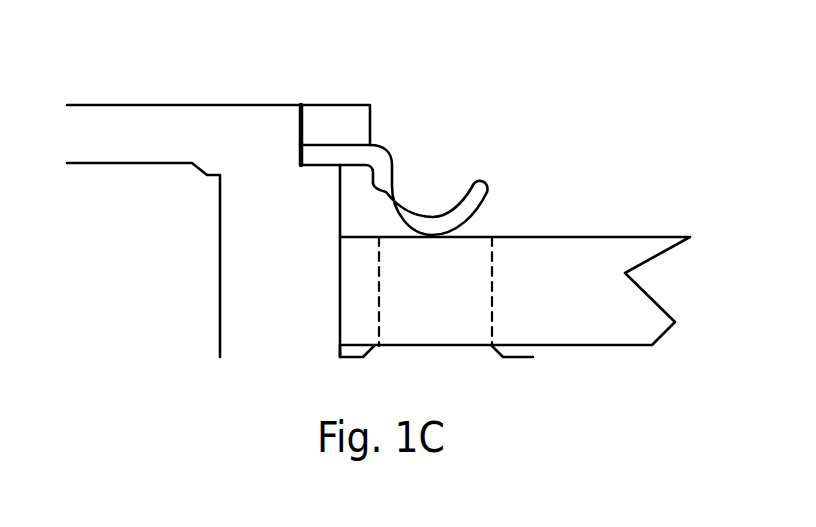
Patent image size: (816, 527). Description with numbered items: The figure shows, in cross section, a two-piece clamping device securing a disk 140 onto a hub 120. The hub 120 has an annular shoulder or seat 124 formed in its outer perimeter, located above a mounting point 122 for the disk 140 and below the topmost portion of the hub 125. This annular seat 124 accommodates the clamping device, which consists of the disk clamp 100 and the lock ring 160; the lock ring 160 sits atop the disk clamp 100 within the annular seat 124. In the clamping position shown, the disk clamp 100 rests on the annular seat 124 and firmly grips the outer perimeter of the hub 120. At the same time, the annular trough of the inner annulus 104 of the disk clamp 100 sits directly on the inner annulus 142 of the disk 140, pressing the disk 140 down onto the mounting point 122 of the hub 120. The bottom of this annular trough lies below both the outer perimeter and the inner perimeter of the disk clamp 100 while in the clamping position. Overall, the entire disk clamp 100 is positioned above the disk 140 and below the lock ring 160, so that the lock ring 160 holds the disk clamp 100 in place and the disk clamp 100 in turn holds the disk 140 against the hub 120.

The disk clamp 100 is at (592, 132).
The inner annulus 104 is at (430, 215).
The hub 120 is at (183, 231).
The mounting point 122 is at (452, 358).
The annular shoulder or seat 124 is at (300, 146).
The topmost portion of the hub 125 is at (260, 104).
The disk 140 is at (515, 261).
The inner annulus of the disk 142 is at (427, 284).
The lock ring 160 is at (472, 55).